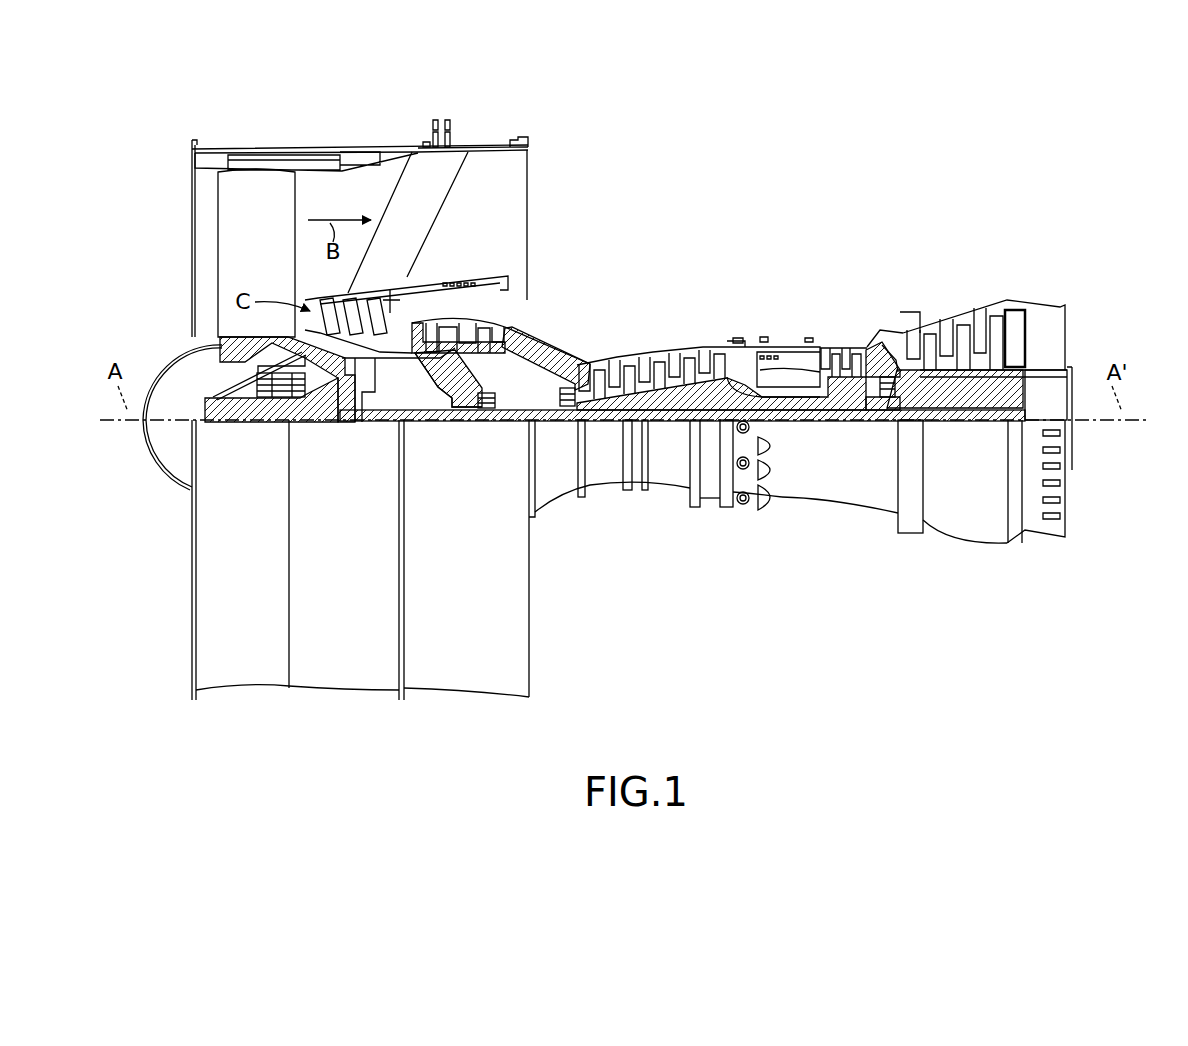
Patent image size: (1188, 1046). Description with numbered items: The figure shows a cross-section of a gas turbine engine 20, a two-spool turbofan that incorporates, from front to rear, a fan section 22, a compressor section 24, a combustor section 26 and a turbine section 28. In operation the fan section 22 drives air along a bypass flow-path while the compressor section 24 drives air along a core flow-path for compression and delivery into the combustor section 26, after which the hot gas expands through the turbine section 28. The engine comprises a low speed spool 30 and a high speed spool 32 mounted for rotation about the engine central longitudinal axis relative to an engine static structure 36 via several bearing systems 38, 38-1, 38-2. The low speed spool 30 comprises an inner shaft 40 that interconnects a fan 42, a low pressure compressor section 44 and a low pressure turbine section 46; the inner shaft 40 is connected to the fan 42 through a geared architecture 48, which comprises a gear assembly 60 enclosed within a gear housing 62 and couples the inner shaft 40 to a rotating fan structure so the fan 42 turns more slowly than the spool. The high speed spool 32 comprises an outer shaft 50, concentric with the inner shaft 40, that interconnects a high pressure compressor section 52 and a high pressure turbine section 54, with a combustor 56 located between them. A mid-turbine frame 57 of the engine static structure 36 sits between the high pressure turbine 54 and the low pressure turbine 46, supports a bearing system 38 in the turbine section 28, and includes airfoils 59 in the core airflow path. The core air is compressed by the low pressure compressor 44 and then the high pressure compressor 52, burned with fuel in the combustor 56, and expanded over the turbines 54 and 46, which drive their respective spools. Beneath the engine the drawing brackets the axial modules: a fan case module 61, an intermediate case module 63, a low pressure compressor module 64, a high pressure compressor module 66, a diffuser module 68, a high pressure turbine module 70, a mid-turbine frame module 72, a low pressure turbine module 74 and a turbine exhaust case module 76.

The gas turbine engine 20 is at (820, 178).
The fan section 22 is at (398, 127).
The compressor section 24 is at (403, 246).
The combustor section 26 is at (827, 246).
The turbine section 28 is at (1013, 246).
The low speed spool 30 is at (677, 440).
The high speed spool 32 is at (703, 390).
The engine static structure 36 is at (166, 709).
The bearing system 38 is at (878, 424).
The bearing system 38-1 is at (265, 400).
The bearing system 38-2 is at (487, 428).
The inner shaft 40 is at (550, 424).
The fan 42 is at (242, 261).
The low pressure compressor section 44 is at (467, 333).
The low pressure turbine section 46 is at (950, 316).
The geared architecture 48 is at (368, 432).
The outer shaft 50 is at (773, 408).
The high pressure compressor section 52 is at (657, 385).
The high pressure turbine section 54 is at (840, 355).
The combustor 56 is at (778, 365).
The mid-turbine frame 57 is at (870, 345).
The airfoils 59 is at (884, 342).
The gear assembly 60 is at (373, 404).
The fan case module 61 is at (197, 718).
The gear housing 62 is at (372, 380).
The intermediate case module 63 is at (324, 718).
The Low Pressure Compressor (LPC) module 64 is at (582, 711).
The High Pressure Compressor (HPC) module 66 is at (582, 713).
The diffuser module 68 is at (708, 714).
The High Pressure Turbine (HPT) module 70 is at (820, 709).
The mid-turbine frame (MTF) module 72 is at (873, 709).
The Low Pressure Turbine (LPT) module 74 is at (1007, 710).
The Turbine Exhaust Case (TEC) module 76 is at (1007, 710).